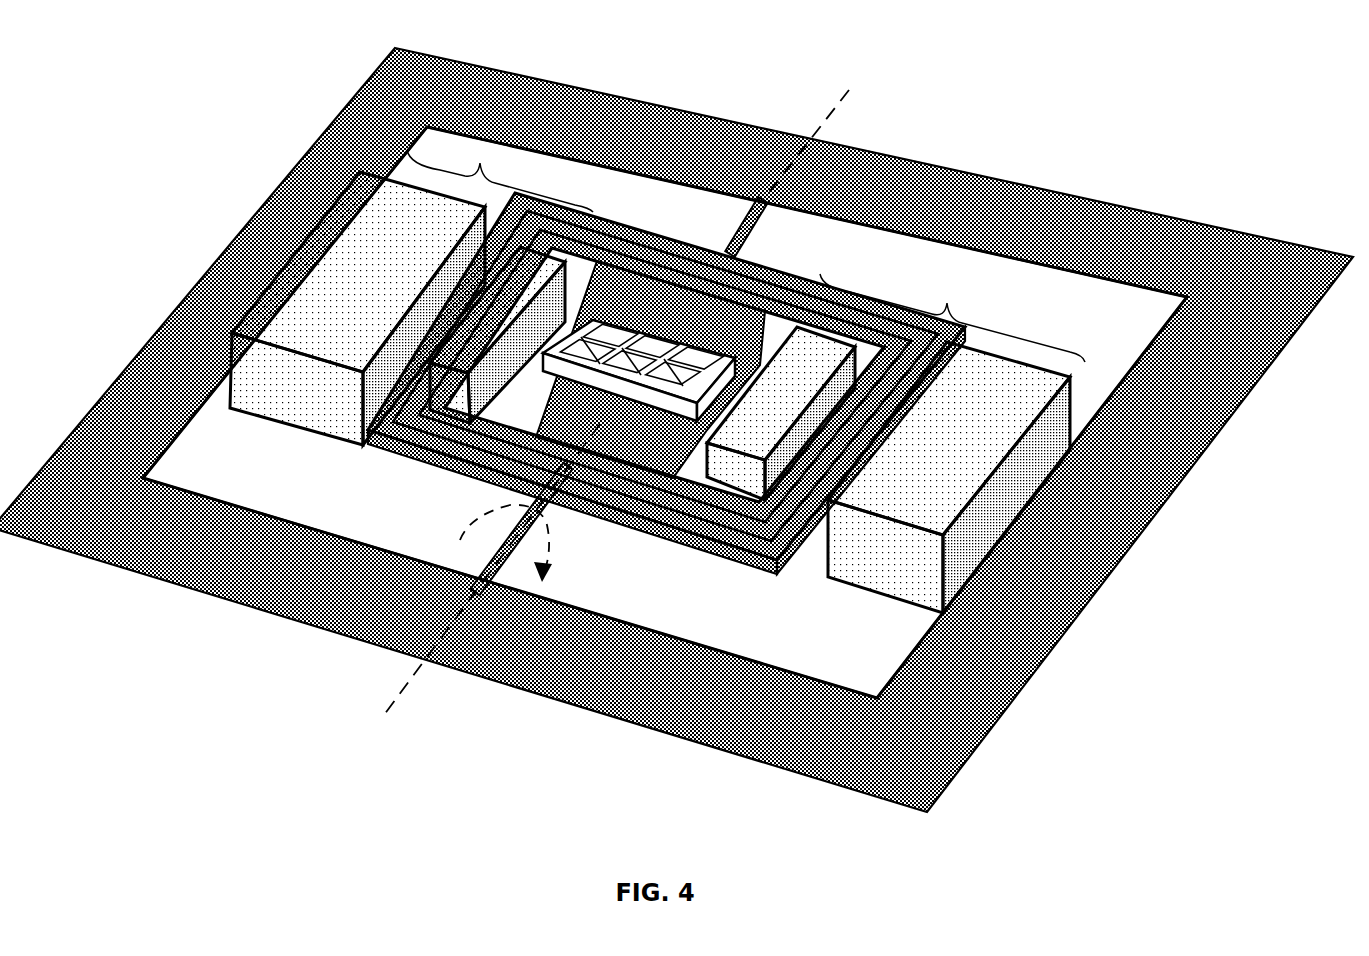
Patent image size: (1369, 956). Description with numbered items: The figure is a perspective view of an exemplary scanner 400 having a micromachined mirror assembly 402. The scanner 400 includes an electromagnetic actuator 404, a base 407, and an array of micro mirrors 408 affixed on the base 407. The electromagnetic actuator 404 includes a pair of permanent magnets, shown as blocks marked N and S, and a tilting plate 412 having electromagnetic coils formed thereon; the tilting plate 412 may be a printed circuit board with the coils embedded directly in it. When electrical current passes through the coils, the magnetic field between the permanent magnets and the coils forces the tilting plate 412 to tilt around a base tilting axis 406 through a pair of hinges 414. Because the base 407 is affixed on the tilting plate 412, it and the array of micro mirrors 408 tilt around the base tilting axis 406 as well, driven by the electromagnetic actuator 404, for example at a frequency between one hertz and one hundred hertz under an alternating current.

The scanner 400 is at (667, 22).
The micromachined mirror assembly 402 is at (814, 232).
The electromagnetic actuator 404 is at (746, 250).
The base tilting axis 406 is at (833, 106).
The base 407 is at (683, 397).
The array of micro mirrors 408 is at (652, 318).
The tilting plate 412 is at (632, 528).
The hinges 414 is at (737, 223).